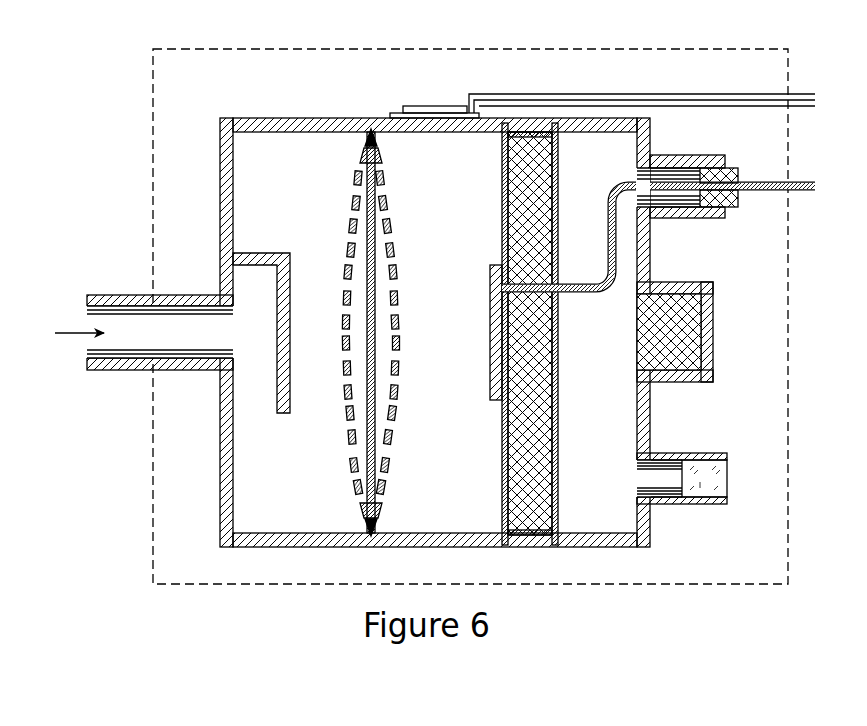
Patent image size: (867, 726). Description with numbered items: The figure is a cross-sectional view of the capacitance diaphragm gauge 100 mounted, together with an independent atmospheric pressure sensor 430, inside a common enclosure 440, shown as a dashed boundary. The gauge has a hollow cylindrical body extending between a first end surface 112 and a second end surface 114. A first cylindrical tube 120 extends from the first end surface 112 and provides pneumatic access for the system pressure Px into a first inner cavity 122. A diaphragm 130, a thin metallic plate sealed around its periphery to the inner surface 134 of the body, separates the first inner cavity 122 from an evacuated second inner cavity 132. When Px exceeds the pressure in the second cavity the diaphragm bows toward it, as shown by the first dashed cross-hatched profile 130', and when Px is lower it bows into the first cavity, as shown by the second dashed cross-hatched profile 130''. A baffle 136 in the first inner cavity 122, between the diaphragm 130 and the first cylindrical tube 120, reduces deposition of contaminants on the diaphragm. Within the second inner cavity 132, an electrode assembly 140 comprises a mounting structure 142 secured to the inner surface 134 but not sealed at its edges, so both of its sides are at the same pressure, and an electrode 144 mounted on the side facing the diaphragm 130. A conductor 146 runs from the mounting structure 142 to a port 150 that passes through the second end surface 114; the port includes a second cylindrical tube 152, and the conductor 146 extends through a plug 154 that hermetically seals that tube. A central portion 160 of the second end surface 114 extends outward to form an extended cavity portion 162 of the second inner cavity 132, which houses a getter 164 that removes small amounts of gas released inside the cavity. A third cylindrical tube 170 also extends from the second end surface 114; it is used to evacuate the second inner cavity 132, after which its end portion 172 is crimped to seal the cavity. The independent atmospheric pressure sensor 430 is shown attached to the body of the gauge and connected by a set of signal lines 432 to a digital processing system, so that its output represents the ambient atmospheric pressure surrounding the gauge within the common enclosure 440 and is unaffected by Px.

The capacitance diaphragm gauge 100 is at (426, 346).
The first end surface 112 is at (220, 207).
The second end surface 114 is at (650, 442).
The first cylindrical tube 120 is at (205, 294).
The first inner cavity 122 is at (315, 355).
The diaphragm 130 is at (346, 332).
The first dashed cross-hatched profile 130' is at (413, 333).
The second dashed cross-hatched profile 130'' is at (330, 333).
The second inner cavity 132 is at (665, 366).
The inner surface 134 is at (257, 133).
The baffle 136 is at (277, 393).
The electrode assembly 140 is at (486, 334).
The mounting structure 142 is at (500, 507).
The electrode 144 is at (490, 365).
The conductor 146 is at (627, 184).
The port 150 is at (712, 165).
The second cylindrical tube 152 is at (699, 165).
The plug 154 is at (733, 172).
The central portion 160 is at (670, 330).
The extended cavity portion 162 is at (630, 320).
The getter 164 is at (643, 360).
The third cylindrical tube 170 is at (700, 470).
The end portion 172 is at (700, 487).
The independent atmospheric pressure sensor 430 is at (438, 94).
The signal lines 432 is at (562, 88).
The common enclosure 440 is at (473, 45).